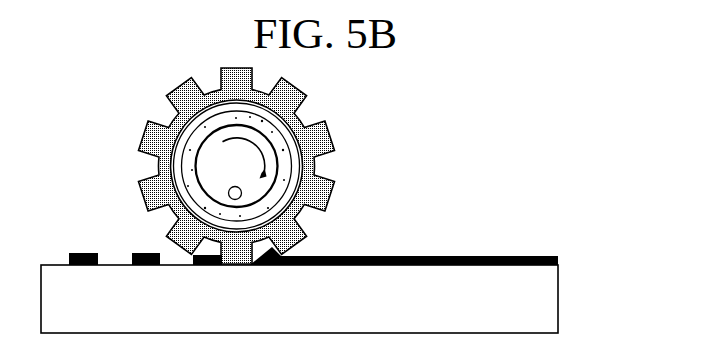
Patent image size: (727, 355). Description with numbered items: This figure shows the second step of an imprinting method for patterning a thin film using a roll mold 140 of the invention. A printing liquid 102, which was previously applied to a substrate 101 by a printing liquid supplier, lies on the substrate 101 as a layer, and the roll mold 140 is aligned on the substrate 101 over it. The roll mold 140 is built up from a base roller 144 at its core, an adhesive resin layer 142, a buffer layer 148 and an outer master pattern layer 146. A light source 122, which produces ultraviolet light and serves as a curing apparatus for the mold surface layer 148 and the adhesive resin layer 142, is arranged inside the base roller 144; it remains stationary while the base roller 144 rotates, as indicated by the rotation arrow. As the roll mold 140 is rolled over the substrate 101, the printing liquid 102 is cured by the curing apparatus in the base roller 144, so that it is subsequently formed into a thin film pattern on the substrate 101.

The substrate 101 is at (543, 295).
The printing liquid 102 is at (522, 256).
The light source 122 is at (242, 194).
The roll mold 140 is at (291, 166).
The adhesive resin layer 142 is at (284, 128).
The base roller 144 is at (295, 167).
The master pattern layer 146 is at (292, 144).
The buffer layer 148 is at (305, 170).